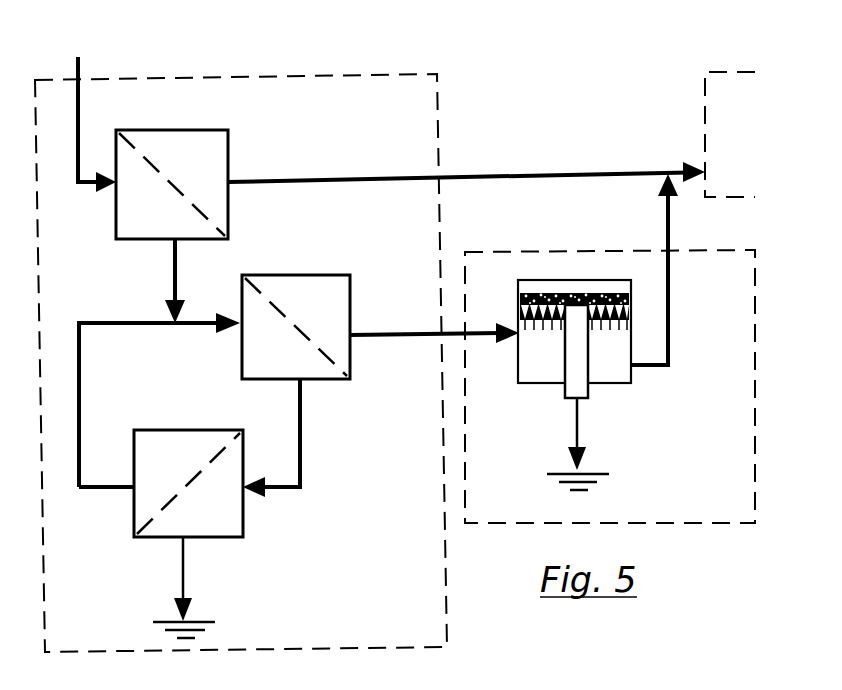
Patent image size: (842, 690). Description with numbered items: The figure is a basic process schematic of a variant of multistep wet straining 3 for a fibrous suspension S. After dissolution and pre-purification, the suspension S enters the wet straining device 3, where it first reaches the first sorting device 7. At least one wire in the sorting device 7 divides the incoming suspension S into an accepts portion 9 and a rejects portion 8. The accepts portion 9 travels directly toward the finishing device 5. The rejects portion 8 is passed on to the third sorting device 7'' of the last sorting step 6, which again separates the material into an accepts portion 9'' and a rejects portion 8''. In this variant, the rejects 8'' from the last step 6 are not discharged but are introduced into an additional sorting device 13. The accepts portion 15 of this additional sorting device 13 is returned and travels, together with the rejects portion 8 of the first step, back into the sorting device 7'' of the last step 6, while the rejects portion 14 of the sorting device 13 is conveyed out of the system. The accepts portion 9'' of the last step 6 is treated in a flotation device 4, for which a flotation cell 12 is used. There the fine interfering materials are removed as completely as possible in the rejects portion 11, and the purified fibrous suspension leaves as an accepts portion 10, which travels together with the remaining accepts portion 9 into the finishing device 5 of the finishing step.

The suspension S is at (80, 102).
The multistep wet straining device 3 is at (410, 114).
The flotation device 4 is at (709, 284).
The finishing device 5 is at (720, 118).
The sorting step 6 is at (341, 398).
The first sorting device 7 is at (172, 184).
The third sorting device 7'' is at (296, 327).
The rejects portion 8 is at (156, 281).
The rejects portion 8'' is at (311, 472).
The accepts portion 9 is at (466, 150).
The accepts portion 9'' is at (434, 384).
The accepts portion 10 is at (666, 223).
The rejects portion 11 is at (582, 432).
The flotation cell 12 is at (623, 368).
The additional sorting device 13 is at (183, 469).
The rejects portion 14 is at (183, 580).
The accepts portion 15 is at (82, 402).